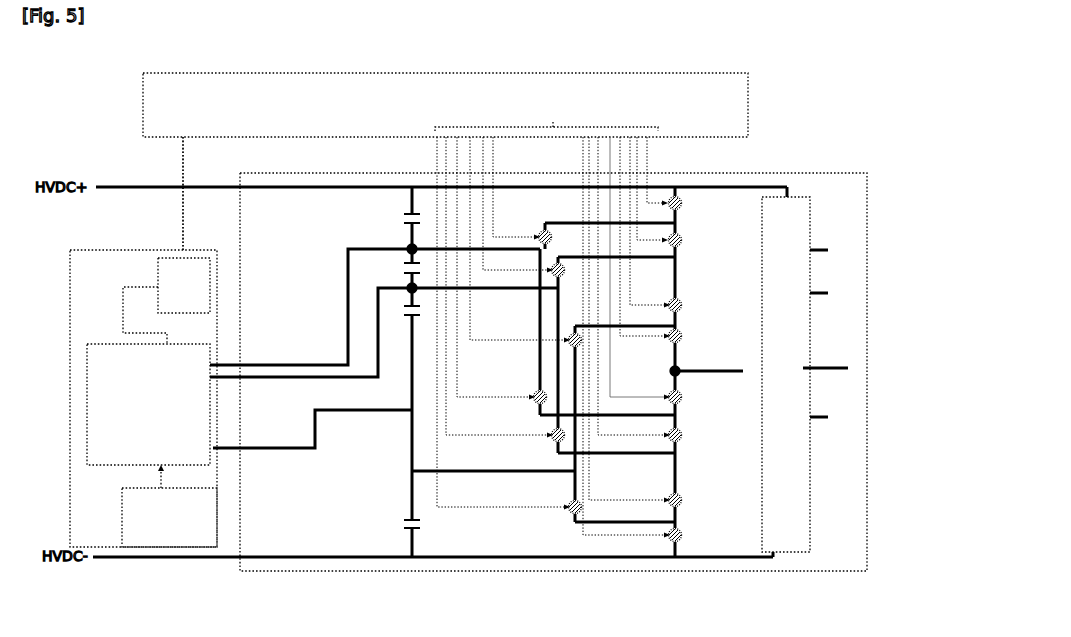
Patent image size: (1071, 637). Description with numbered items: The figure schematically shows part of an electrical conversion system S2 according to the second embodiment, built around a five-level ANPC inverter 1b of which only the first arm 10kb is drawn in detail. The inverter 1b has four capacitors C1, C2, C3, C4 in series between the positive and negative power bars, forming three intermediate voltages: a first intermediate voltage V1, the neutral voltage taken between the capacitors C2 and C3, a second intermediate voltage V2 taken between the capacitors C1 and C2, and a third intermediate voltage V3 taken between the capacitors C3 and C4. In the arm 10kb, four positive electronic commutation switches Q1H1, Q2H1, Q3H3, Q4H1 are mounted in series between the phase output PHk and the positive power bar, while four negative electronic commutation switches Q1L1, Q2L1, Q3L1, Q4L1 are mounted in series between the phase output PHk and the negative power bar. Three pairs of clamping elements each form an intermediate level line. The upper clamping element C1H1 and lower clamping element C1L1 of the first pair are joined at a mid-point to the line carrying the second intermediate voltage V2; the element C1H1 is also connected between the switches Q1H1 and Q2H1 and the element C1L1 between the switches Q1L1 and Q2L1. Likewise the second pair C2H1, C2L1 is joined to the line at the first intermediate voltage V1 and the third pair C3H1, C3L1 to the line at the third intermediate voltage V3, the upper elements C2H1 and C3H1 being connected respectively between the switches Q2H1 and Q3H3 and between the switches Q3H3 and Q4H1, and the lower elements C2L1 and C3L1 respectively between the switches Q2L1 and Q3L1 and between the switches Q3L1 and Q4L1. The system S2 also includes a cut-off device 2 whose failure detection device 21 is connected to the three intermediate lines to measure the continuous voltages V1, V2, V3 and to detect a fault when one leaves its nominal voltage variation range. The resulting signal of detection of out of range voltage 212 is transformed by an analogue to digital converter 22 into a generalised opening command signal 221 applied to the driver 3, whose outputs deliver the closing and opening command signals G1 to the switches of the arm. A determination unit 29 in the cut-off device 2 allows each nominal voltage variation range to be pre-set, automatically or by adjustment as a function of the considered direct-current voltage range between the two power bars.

The driver 3 is at (445, 161).
The closing and opening command signal G1 is at (546, 115).
The electrical conversion system S2 is at (790, 146).
The ANPC inverter 1b is at (845, 186).
The cut-off device 2 is at (82, 436).
The generalised opening command signal 221 is at (199, 193).
The analogue to digital converter 22 is at (184, 285).
The signal of detection of out of range voltage 212 is at (145, 315).
The failure detection device 21 is at (148, 404).
The determination unit 29 is at (169, 506).
The first arm 10kb is at (515, 545).
The first capacitor C1 is at (389, 218).
The second capacitor C2 is at (391, 268).
The third capacitor C3 is at (401, 379).
The fourth capacitor C4 is at (395, 514).
The first intermediate voltage V1 is at (384, 344).
The second intermediate voltage V2 is at (375, 307).
The third intermediate voltage V3 is at (312, 429).
The phase output PHk is at (765, 370).
The upper clamping element of first pair C1H1 is at (524, 227).
The upper clamping element of second pair C2H1 is at (529, 266).
The upper clamping element of third pair C3H1 is at (566, 343).
The lower clamping element of first pair C1L1 is at (522, 394).
The lower clamping element of second pair C2L1 is at (540, 447).
The lower clamping element of third pair C3L1 is at (561, 518).
The first positive electronic commutation switch Q1H1 is at (697, 208).
The second positive electronic commutation switch Q2H1 is at (697, 239).
The third positive electronic commutation switch Q3H3 is at (697, 309).
The fourth positive electronic commutation switch Q4H1 is at (697, 343).
The first negative electronic commutation switch Q1L1 is at (696, 398).
The second negative electronic commutation switch Q2L1 is at (696, 436).
The third negative electronic commutation switch Q3L1 is at (696, 498).
The fourth negative electronic commutation switch Q4L1 is at (696, 538).